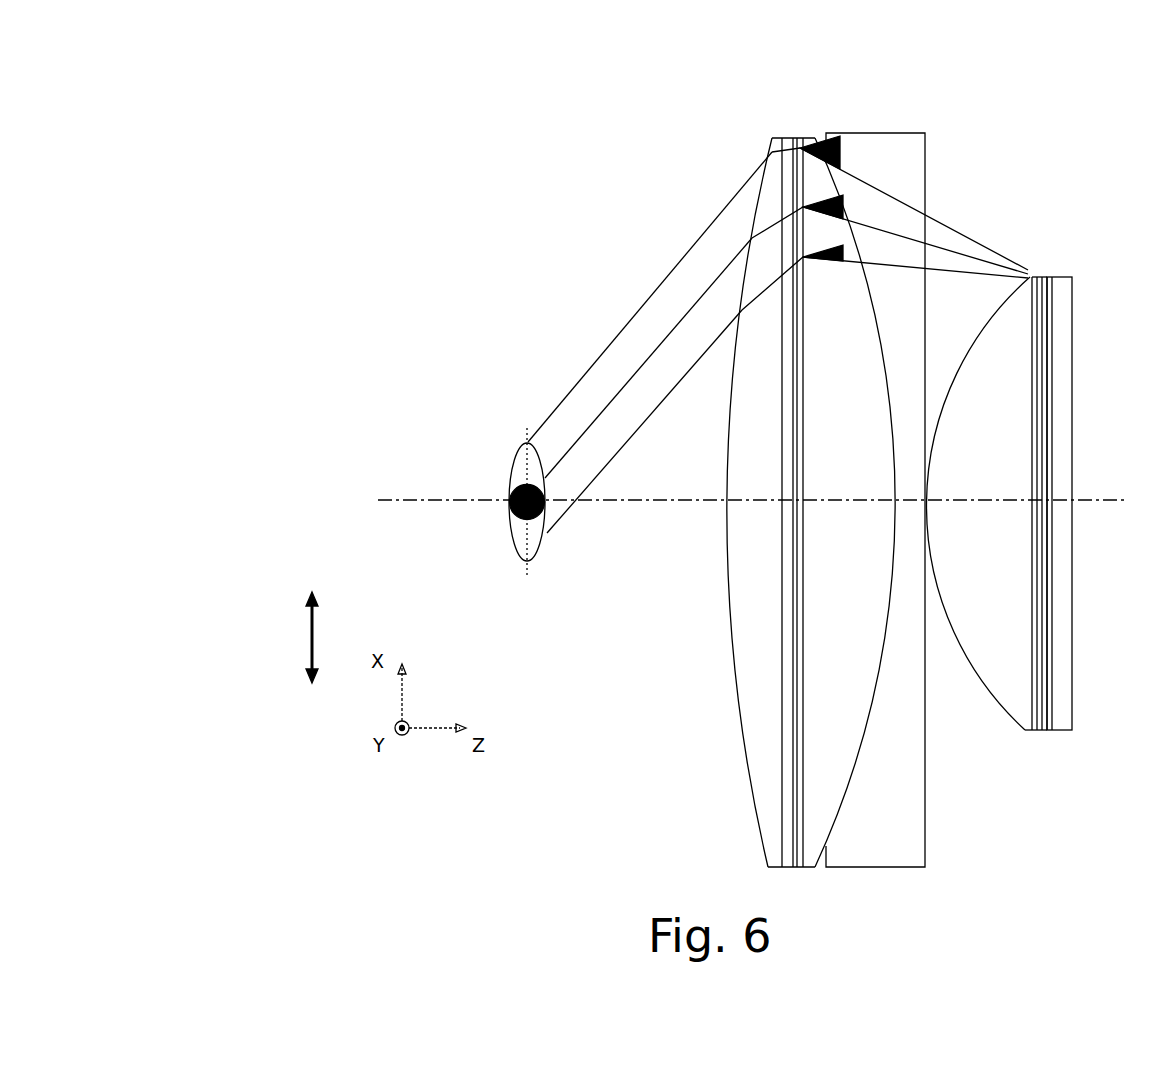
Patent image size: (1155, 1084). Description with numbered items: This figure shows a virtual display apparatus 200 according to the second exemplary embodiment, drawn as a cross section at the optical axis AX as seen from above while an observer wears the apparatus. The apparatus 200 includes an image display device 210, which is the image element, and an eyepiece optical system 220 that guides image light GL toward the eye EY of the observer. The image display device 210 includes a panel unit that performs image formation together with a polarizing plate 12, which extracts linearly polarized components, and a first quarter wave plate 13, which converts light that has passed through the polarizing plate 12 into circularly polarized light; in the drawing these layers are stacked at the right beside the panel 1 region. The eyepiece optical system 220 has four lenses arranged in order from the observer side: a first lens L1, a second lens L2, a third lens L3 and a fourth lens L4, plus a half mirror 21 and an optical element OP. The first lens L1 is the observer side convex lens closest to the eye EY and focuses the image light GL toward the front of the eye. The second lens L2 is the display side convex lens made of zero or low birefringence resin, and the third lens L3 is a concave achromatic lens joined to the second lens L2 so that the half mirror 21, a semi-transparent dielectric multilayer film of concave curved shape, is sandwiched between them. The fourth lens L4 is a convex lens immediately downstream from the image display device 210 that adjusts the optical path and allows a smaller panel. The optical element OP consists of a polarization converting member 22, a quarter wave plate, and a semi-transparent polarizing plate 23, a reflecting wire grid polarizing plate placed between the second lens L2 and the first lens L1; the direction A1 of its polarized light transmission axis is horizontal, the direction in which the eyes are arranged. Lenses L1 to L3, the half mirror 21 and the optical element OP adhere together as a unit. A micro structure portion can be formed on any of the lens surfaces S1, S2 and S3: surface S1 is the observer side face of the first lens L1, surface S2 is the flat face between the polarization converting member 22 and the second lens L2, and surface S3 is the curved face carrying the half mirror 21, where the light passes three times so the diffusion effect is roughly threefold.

The display element 1 is at (1075, 355).
The polarizing plate 12 is at (1042, 730).
The first quarter wave plate 13 is at (1035, 730).
The half mirror 21 is at (829, 478).
The polarization converting member 22 is at (916, 478).
The semi-transparent polarizing plate 23 is at (785, 137).
The virtual display apparatus 200 is at (1040, 445).
The image display device 210 is at (1040, 510).
The eyepiece optical system 220 is at (923, 480).
The optical element OP is at (797, 96).
The image light GL is at (667, 395).
The eye EY is at (523, 543).
The direction of polarized light transmission axis A1 is at (308, 630).
The optical axis AX is at (1122, 492).
The lens surface S1 is at (727, 577).
The lens surface S2 is at (806, 372).
The lens surface S3 is at (797, 375).
The first lens L1 is at (697, 502).
The second lens L2 is at (832, 745).
The third lens L3 is at (890, 742).
The fourth lens L4 is at (1002, 695).